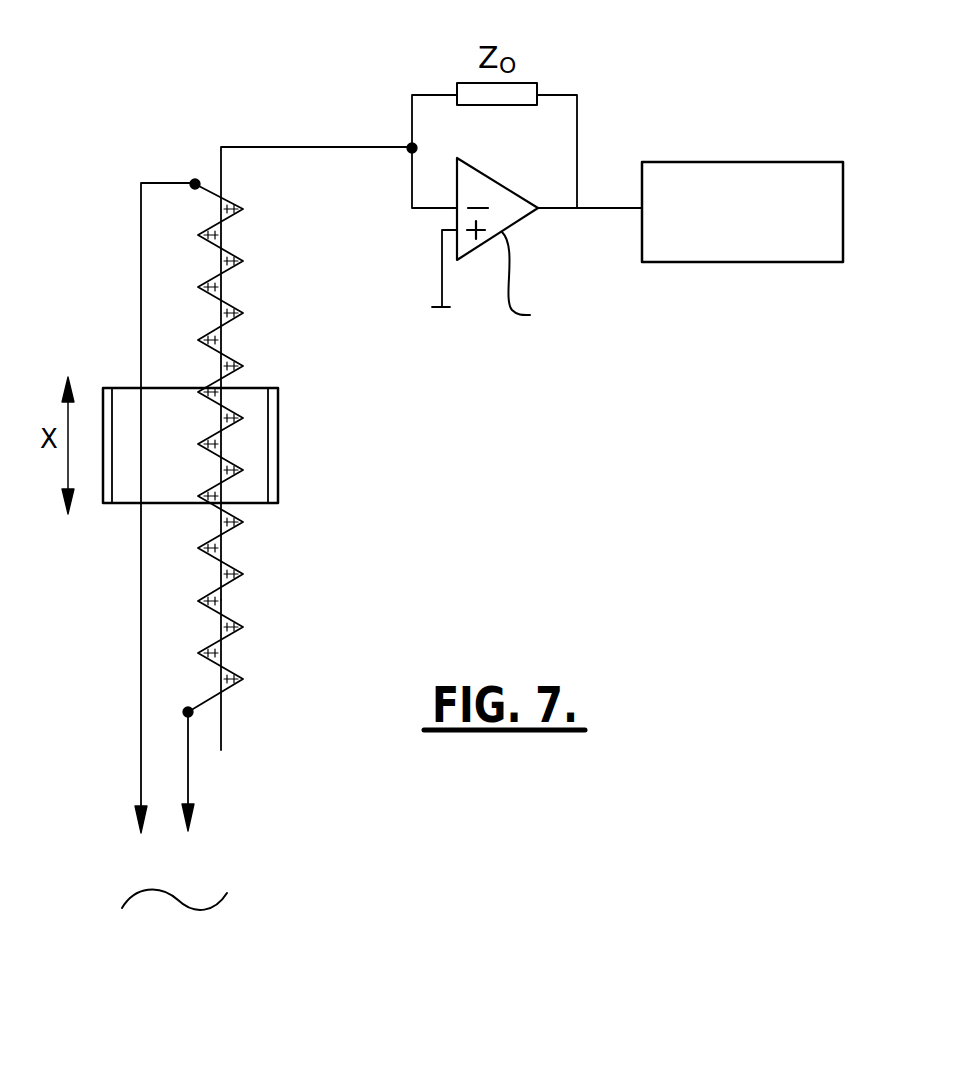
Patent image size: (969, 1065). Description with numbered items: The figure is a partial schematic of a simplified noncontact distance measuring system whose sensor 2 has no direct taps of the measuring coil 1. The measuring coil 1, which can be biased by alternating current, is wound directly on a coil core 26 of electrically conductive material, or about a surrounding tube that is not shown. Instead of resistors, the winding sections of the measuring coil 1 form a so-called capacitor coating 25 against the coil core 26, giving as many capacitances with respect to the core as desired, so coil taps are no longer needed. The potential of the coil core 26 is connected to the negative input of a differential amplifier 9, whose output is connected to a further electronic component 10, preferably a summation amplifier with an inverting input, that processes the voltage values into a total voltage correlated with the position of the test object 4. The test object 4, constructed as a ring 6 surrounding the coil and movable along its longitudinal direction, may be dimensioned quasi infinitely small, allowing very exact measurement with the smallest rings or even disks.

The measuring coil 1 is at (195, 184).
The sensor 2 is at (203, 72).
The test object 4 is at (103, 389).
The ring 6 is at (96, 365).
The differential amplifier 9 is at (485, 183).
The electronic component 10 is at (757, 251).
The capacitor coating 25 is at (233, 262).
The coil core 26 is at (222, 718).